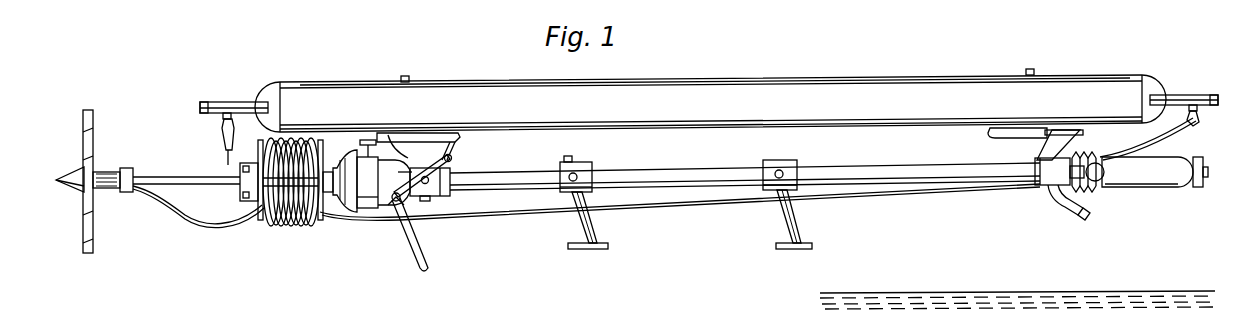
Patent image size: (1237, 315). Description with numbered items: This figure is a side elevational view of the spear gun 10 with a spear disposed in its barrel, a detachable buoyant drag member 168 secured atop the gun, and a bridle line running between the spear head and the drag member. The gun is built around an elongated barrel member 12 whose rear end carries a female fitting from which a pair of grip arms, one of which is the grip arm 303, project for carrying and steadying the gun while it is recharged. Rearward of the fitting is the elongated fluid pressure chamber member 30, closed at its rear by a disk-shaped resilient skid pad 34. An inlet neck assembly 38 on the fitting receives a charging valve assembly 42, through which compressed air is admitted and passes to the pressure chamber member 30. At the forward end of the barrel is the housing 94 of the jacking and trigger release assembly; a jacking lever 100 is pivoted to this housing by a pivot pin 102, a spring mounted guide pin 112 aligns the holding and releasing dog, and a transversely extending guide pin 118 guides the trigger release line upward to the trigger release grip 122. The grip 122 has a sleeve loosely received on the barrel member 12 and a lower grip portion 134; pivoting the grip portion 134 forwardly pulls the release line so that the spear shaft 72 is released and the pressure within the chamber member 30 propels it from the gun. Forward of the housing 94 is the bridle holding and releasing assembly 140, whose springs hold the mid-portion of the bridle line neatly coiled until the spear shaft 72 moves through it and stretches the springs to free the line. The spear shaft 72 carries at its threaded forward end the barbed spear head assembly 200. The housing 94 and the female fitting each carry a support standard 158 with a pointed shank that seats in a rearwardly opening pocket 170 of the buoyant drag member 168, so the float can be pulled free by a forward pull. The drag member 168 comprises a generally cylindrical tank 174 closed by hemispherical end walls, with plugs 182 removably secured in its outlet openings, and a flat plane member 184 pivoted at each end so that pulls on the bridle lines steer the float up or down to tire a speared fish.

The spear gun 10 is at (569, 218).
The barrel member 12 is at (675, 165).
The fluid pressure chamber member 30 is at (1150, 189).
The skid pad 34 is at (1198, 189).
The inlet neck assembly 38 is at (1046, 199).
The charging valve assembly 42 is at (1073, 216).
The spear shaft 72 is at (183, 187).
The housing 94 is at (421, 200).
The jacking lever 100 is at (421, 270).
The pivot pin 102 is at (396, 202).
The spring mounted guide pin 112 is at (368, 138).
The guide pin 118 is at (452, 160).
The trigger release grip 122 is at (601, 229).
The grip portion 134 is at (580, 244).
The bridle holding and releasing assembly 140 is at (253, 160).
The support standard 158 is at (408, 150).
The buoyant drag member 168 is at (982, 75).
The pockets 170 is at (422, 137).
The tank 174 is at (835, 80).
The plugs 182 is at (405, 76).
The plane member 184 is at (231, 100).
The spear head assembly 200 is at (76, 203).
The grip arm 303 is at (1086, 186).